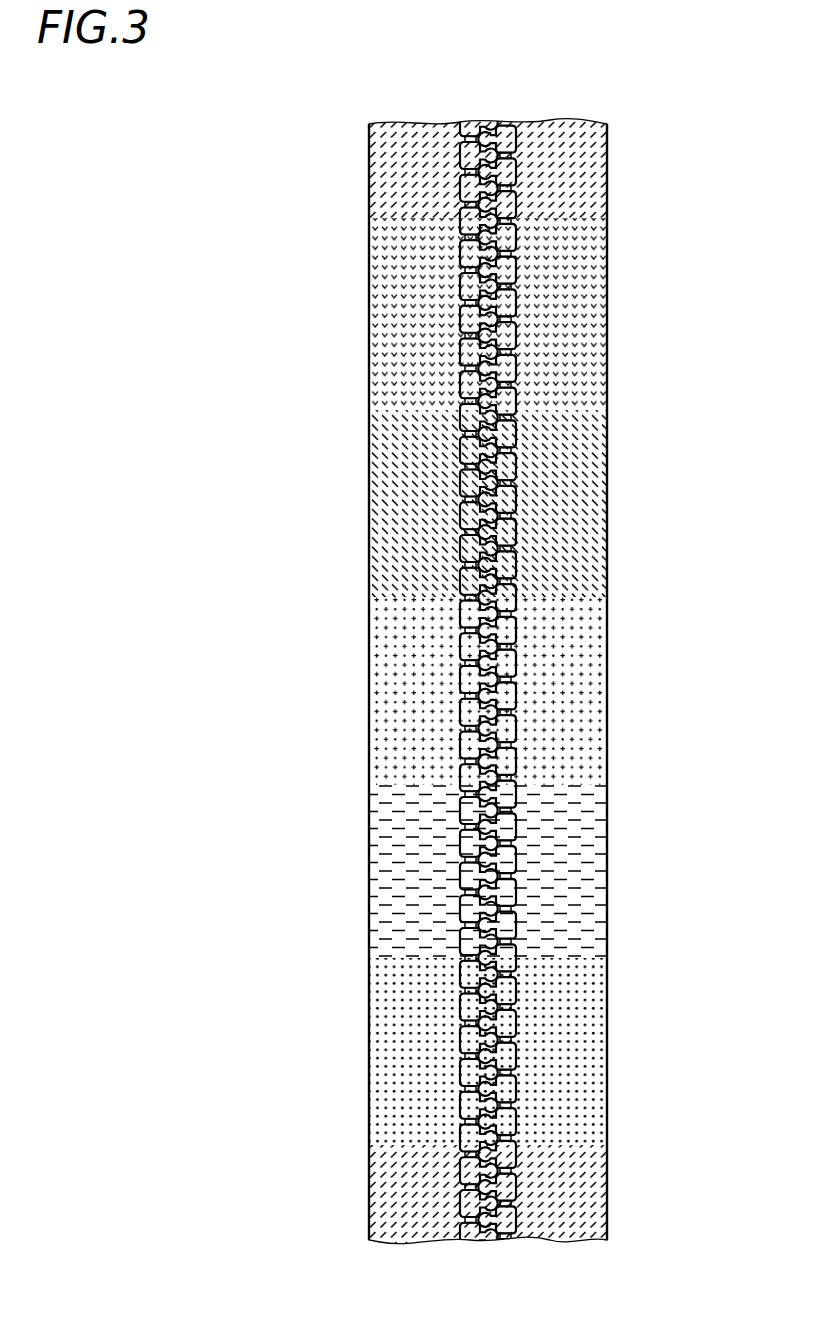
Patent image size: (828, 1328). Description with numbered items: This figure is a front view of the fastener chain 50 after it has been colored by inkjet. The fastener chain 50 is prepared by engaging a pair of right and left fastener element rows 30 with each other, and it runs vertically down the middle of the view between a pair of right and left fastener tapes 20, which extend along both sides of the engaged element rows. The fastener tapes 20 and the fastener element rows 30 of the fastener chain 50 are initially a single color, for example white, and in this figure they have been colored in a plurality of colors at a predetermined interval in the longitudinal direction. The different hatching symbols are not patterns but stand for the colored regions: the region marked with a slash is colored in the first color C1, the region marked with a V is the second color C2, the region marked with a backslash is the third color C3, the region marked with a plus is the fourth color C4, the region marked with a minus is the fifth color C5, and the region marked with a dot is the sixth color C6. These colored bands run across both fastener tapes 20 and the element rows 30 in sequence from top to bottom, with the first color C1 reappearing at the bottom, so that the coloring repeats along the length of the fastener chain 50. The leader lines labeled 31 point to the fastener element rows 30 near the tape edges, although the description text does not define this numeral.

The fastener tape 20 is at (414, 138).
The fastener element row 30 is at (459, 218).
The element body 31 is at (460, 290).
The fastener chain 50 is at (607, 417).
The first color C1 is at (405, 165).
The second color C2 is at (405, 358).
The third color C3 is at (405, 494).
The fourth color C4 is at (405, 680).
The fifth color C5 is at (405, 880).
The sixth color C6 is at (405, 1058).